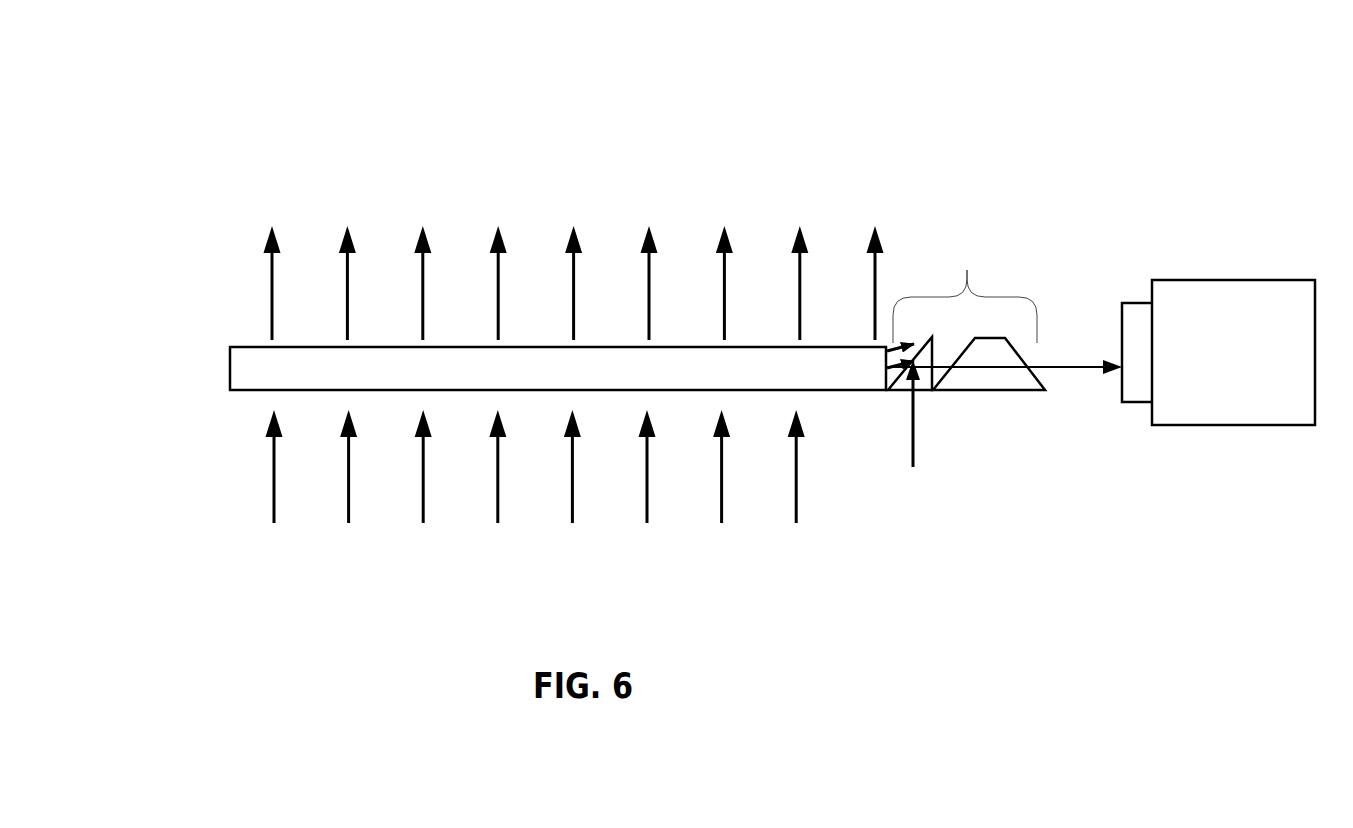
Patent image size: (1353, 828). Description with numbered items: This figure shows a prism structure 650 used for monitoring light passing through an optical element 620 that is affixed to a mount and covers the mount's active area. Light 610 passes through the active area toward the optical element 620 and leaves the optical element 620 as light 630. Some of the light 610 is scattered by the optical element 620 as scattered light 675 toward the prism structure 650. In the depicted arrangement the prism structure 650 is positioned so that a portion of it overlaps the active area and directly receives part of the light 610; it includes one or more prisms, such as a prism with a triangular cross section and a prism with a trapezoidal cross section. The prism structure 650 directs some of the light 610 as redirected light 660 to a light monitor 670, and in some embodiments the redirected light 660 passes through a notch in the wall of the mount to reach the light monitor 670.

The light 610 is at (402, 529).
The optical element 620 is at (229, 367).
The light 630 is at (528, 193).
The prism structure 650 is at (966, 286).
The redirected light 660 is at (1070, 370).
The light monitor 670 is at (1218, 352).
The scattered light 675 is at (887, 386).